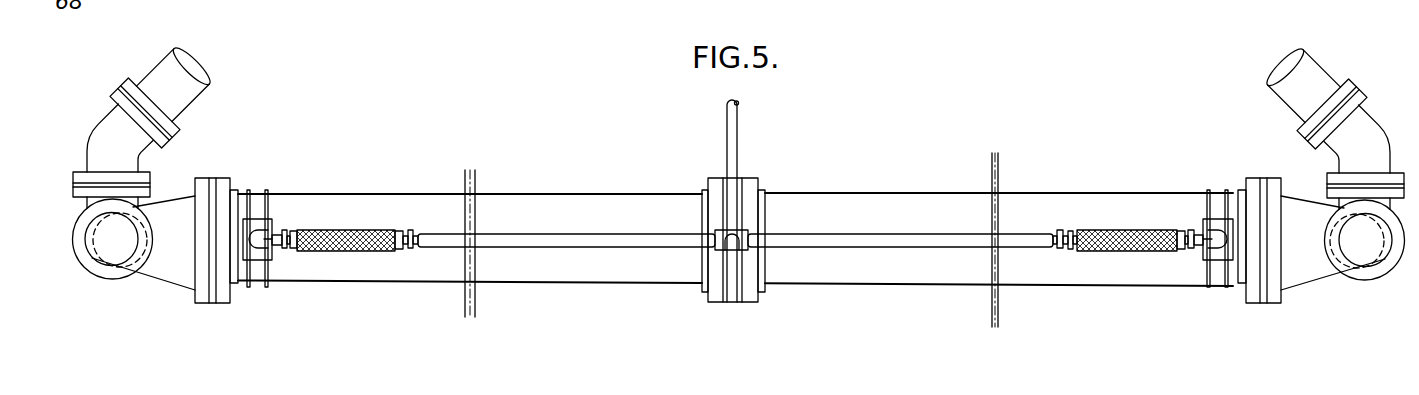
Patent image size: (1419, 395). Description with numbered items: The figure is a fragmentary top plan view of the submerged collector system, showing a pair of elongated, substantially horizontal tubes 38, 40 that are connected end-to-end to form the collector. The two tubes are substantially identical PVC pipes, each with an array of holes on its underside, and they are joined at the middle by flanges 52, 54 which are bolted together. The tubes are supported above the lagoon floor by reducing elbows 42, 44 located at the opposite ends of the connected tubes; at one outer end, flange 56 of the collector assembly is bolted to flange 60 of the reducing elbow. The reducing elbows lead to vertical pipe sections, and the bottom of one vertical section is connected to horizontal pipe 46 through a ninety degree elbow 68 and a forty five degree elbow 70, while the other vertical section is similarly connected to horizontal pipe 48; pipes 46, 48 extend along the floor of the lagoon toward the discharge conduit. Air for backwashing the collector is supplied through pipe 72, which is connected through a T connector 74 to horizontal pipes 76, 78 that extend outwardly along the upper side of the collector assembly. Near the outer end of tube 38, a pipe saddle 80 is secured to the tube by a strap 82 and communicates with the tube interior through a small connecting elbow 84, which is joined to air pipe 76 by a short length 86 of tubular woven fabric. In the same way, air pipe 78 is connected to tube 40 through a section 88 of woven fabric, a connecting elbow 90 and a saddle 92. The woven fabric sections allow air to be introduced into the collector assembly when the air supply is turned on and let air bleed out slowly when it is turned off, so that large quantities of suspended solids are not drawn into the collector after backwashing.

The tube 38 is at (615, 202).
The tube 40 is at (925, 213).
The reducing elbow 42 is at (165, 263).
The reducing elbow 44 is at (1317, 253).
The pipe 46 is at (185, 98).
The pipe 48 is at (1293, 92).
The flange 52 is at (718, 298).
The flange 54 is at (747, 300).
The flange 56 is at (223, 181).
The flange 60 is at (203, 183).
The ninety degree elbow 68 is at (87, 205).
The forty five degree elbow 70 is at (103, 130).
The pipe 72 is at (733, 150).
The T connector 74 is at (722, 250).
The horizontal pipe 76 is at (522, 236).
The horizontal pipe 78 is at (845, 240).
The pipe saddle 80 is at (263, 254).
The strap 82 is at (254, 289).
The connecting elbow 84 is at (266, 234).
The length of tubular woven fabric 86 is at (358, 230).
The section of woven fabric 88 is at (1105, 233).
The connecting elbow 90 is at (1203, 240).
The saddle 92 is at (1208, 260).